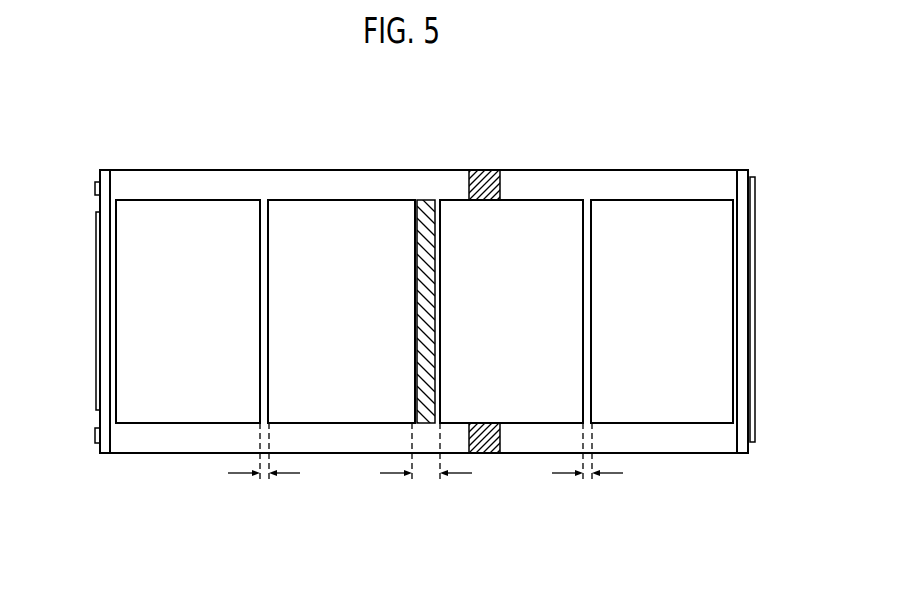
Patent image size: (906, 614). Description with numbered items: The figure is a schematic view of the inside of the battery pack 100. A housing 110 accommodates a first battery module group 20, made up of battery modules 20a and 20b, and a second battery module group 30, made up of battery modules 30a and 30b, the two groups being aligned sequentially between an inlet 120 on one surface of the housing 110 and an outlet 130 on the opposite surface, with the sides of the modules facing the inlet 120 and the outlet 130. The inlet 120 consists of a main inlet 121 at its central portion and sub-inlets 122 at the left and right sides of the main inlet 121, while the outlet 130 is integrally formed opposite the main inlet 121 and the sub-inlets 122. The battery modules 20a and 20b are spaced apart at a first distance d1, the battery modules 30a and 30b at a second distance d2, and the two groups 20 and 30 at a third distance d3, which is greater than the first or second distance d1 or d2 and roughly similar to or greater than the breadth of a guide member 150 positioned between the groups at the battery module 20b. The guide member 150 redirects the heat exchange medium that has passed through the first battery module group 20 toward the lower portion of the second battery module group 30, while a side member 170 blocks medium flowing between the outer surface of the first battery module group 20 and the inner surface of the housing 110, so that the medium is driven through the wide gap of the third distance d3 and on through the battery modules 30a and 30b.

The battery pack 100 is at (714, 118).
The housing 110 is at (626, 164).
The inlet 120 is at (53, 198).
The main inlet 121 is at (96, 301).
The sub-inlets 122 is at (96, 194).
The outlet 130 is at (757, 298).
The guide member 150 is at (424, 210).
The side member 170 is at (487, 176).
The first battery module group 20 is at (353, 299).
The battery module 20a is at (188, 311).
The battery module 20b is at (341, 311).
The second battery module group 30 is at (493, 299).
The battery module 30a is at (511, 311).
The battery module 30b is at (662, 311).
The first distance d1 is at (270, 481).
The second distance d2 is at (588, 481).
The third distance d3 is at (428, 481).